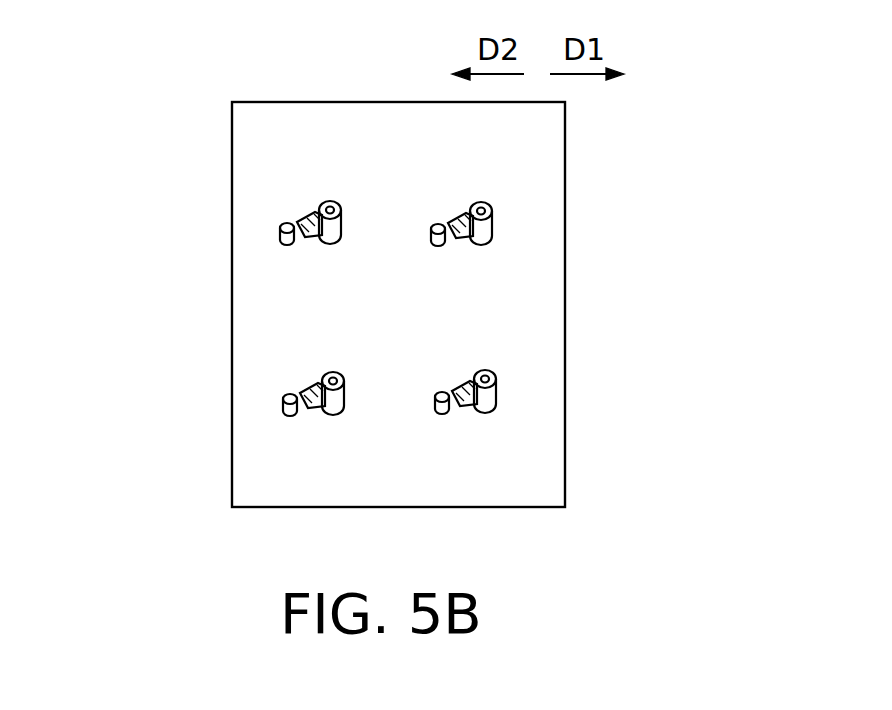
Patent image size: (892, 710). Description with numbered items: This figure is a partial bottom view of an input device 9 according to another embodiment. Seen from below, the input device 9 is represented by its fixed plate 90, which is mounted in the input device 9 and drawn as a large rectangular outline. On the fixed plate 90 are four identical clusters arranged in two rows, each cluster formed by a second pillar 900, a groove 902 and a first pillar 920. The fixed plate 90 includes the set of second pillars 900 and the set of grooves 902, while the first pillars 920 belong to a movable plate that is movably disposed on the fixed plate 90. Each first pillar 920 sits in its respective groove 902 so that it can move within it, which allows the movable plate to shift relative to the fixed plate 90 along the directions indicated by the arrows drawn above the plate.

The input device 9 is at (190, 100).
The fixed plate 90 is at (533, 210).
The second pillars 900 is at (264, 203).
The grooves 902 is at (323, 259).
The first pillars 920 is at (354, 198).